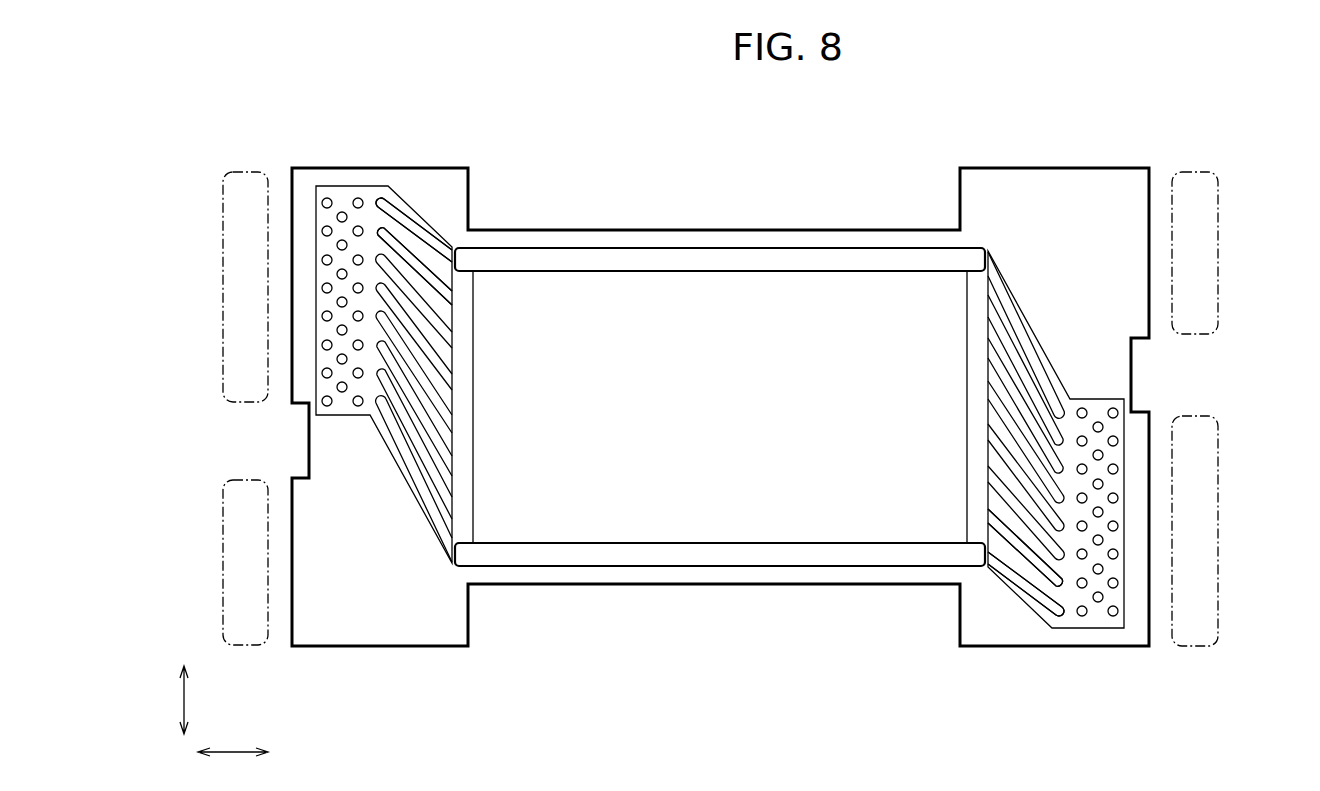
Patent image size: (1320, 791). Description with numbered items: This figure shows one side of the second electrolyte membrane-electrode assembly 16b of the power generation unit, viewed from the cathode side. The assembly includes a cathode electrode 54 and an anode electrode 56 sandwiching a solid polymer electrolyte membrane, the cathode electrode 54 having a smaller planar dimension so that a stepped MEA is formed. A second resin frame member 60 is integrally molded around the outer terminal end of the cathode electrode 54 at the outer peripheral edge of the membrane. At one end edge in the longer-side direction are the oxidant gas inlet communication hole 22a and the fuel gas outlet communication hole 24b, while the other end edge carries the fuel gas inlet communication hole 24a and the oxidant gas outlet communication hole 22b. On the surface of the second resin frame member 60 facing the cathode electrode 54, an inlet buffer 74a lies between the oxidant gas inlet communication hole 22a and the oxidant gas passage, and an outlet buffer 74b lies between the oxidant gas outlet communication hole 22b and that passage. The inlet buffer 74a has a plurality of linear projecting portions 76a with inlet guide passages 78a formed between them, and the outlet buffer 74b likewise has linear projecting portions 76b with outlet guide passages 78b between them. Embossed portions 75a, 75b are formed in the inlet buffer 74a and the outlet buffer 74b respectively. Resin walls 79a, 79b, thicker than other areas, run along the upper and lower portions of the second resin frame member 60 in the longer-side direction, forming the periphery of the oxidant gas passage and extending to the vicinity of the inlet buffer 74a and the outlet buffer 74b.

The second electrolyte membrane-electrode assembly 16b is at (877, 96).
The oxidant gas inlet communication hole 22a is at (246, 219).
The oxidant gas outlet communication hole 22b is at (1195, 500).
The fuel gas inlet communication hole 24a is at (1195, 242).
The fuel gas outlet communication hole 24b is at (246, 550).
The cathode electrode 54 is at (612, 296).
The anode electrode 56 is at (680, 297).
The second resin frame member 60 is at (1040, 168).
The inlet buffer 74a is at (410, 177).
The outlet buffer 74b is at (1022, 627).
The embossed portions 75a is at (323, 405).
The embossed portions 75b is at (1115, 412).
The linear projecting portions 76a is at (428, 242).
The linear projecting portions 76b is at (1007, 572).
The inlet guide passages 78a is at (415, 243).
The outlet guide passages 78b is at (1033, 573).
The resin wall 79a is at (780, 260).
The resin wall 79b is at (708, 558).